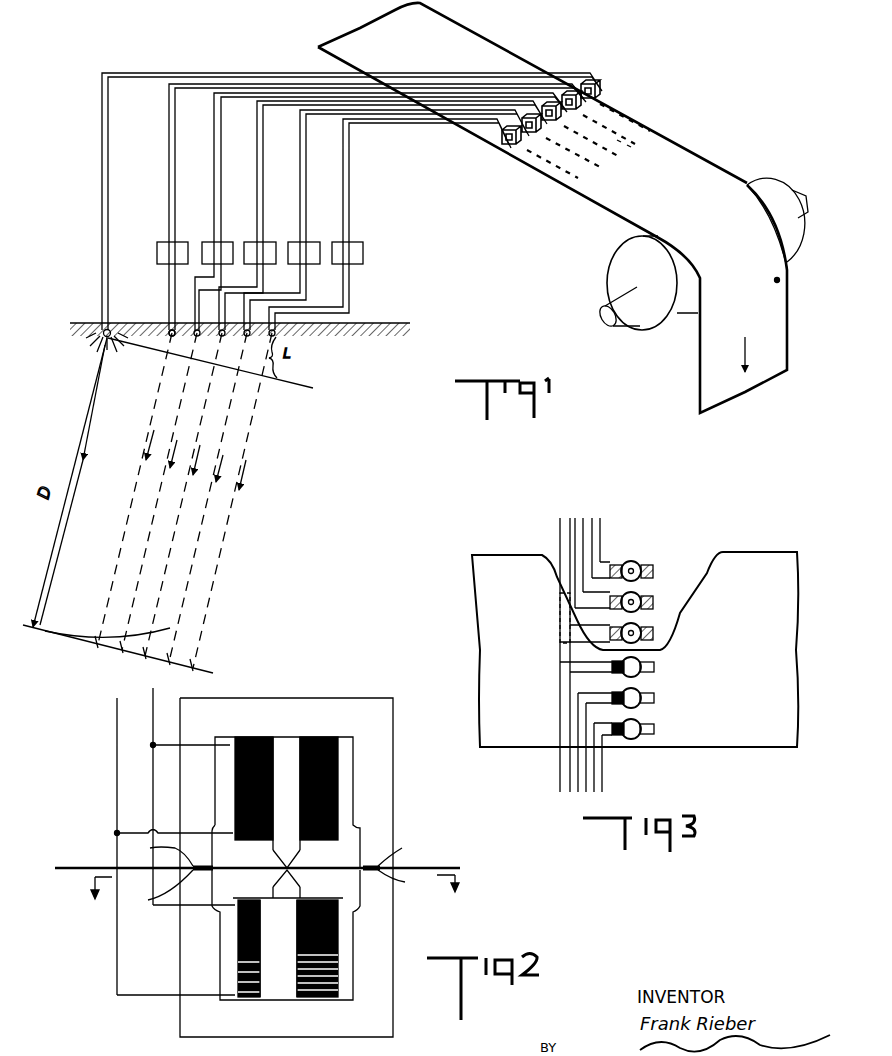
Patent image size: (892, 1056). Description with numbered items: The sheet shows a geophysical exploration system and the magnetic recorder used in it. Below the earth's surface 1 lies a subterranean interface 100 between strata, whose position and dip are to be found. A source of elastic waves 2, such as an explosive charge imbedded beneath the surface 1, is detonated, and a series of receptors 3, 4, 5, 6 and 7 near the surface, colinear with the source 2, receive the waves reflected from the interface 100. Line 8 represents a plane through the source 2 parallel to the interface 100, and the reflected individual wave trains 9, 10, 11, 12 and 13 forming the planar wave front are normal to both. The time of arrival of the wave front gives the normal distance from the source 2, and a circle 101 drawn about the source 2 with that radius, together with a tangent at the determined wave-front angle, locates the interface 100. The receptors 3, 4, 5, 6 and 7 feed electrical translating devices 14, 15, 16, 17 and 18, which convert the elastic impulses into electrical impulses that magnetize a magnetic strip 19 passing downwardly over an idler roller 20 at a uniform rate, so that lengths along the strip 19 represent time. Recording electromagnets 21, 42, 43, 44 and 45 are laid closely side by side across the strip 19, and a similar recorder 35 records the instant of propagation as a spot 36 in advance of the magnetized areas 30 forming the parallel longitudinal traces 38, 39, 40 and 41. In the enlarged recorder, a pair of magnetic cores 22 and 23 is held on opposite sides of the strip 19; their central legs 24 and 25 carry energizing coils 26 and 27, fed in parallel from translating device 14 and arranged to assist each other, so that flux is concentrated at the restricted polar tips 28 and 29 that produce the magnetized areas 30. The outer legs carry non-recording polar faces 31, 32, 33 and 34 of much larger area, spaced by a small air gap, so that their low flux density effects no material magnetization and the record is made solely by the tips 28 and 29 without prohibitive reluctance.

In FIG. 1, the earth's surface 1 is at (392, 324).
In FIG. 1, the source of elastic waves 2 is at (95, 343).
In FIG. 1, the receptor 3 is at (165, 338).
In FIG. 1, the receptor 4 is at (174, 328).
In FIG. 1, the receptor 5 is at (199, 328).
In FIG. 1, the receptor 6 is at (224, 328).
In FIG. 1, the receptor 7 is at (249, 328).
In FIG. 1, the line representing plane parallel to interface 8 is at (300, 383).
In FIG. 1, the reflected wave train 9 is at (135, 480).
In FIG. 1, the reflected wave train 10 is at (157, 498).
In FIG. 1, the reflected wave train 11 is at (181, 512).
In FIG. 1, the reflected wave train 12 is at (198, 530).
In FIG. 1, the reflected wave train 13 is at (215, 556).
In FIG. 1, the electrical translating device 14 is at (160, 250).
In FIG. 1, the electrical translating device 15 is at (210, 250).
In FIG. 1, the electrical translating device 16 is at (257, 250).
In FIG. 1, the electrical translating device 17 is at (300, 250).
In FIG. 1, the electrical translating device 18 is at (344, 250).
In FIG. 1, the magnetic tape or strip 19 is at (657, 152).
In FIG. 3, the magnetic tape or strip 19 is at (503, 562).
In FIG. 2, the magnetic tape or strip 19 is at (417, 867).
In FIG. 1, the idler roller 20 is at (653, 330).
In FIG. 1, the recording electromagnet 21 is at (608, 135).
In FIG. 3, the recording electromagnet 21 is at (648, 600).
In FIG. 2, the magnetic core 22 is at (378, 748).
In FIG. 2, the magnetic core 23 is at (378, 958).
In FIG. 2, the central leg 24 is at (287, 788).
In FIG. 2, the central leg 25 is at (290, 892).
In FIG. 2, the energizing coil 26 is at (250, 735).
In FIG. 2, the energizing coil 27 is at (333, 933).
In FIG. 2, the polar tip 28 is at (294, 861).
In FIG. 2, the polar tip 29 is at (282, 881).
In FIG. 1, the magnetized area 30 is at (619, 141).
In FIG. 1, the non-recording polar face 31 is at (629, 146).
In FIG. 2, the non-recording polar face 31 is at (131, 847).
In FIG. 2, the non-recording polar face 32 is at (159, 895).
In FIG. 2, the non-recording polar face 33 is at (401, 846).
In FIG. 2, the non-recording polar face 34 is at (402, 880).
In FIG. 1, the magnetic recorder 35 is at (588, 95).
In FIG. 3, the magnetic recorder 35 is at (653, 565).
In FIG. 1, the spot 36 is at (777, 283).
In FIG. 1, the longitudinal magnetic record 38 is at (613, 162).
In FIG. 1, the longitudinal magnetic record 39 is at (583, 172).
In FIG. 1, the longitudinal magnetic record 40 is at (568, 168).
In FIG. 1, the longitudinal magnetic record 41 is at (546, 166).
In FIG. 1, the magnetic recorder 42 is at (564, 95).
In FIG. 3, the magnetic recorder 42 is at (653, 633).
In FIG. 1, the magnetic recorder 43 is at (546, 105).
In FIG. 3, the magnetic recorder 43 is at (653, 667).
In FIG. 1, the magnetic recorder 44 is at (522, 148).
In FIG. 3, the magnetic recorder 44 is at (655, 698).
In FIG. 1, the magnetic recorder 45 is at (505, 150).
In FIG. 3, the magnetic recorder 45 is at (657, 738).
In FIG. 1, the subterranean interface 100 is at (168, 660).
In FIG. 1, the circle 101 is at (117, 636).